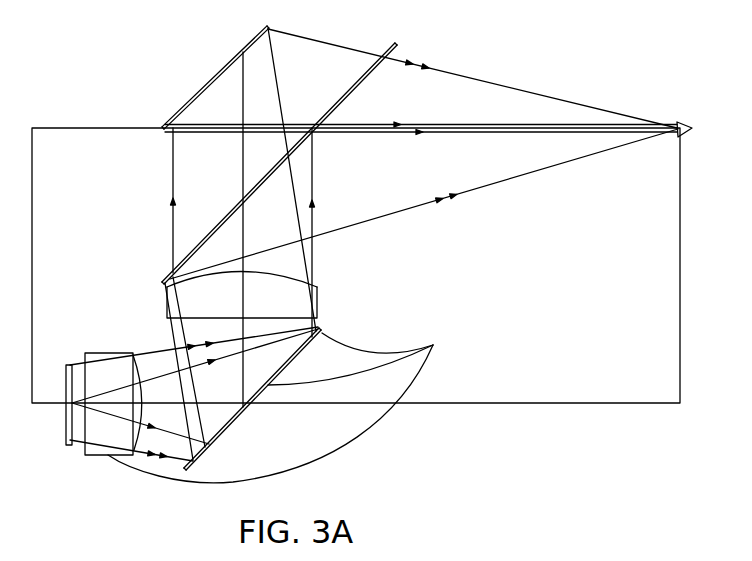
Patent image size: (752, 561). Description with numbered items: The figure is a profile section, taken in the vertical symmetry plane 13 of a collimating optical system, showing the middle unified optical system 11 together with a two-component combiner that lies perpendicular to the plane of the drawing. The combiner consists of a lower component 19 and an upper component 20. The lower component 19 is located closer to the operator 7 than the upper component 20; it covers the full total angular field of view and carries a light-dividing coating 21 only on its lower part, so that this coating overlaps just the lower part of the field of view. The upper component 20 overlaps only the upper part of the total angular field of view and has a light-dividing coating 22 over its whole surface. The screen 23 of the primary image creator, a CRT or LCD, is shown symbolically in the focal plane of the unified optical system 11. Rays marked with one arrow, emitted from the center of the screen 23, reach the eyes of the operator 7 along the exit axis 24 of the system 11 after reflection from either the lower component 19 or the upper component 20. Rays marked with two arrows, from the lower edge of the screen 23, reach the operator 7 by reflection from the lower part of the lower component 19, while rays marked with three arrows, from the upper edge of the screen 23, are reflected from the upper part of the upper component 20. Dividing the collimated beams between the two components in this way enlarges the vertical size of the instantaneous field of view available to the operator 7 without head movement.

The operator 7 is at (672, 123).
The middle unified optical system 11 is at (434, 345).
The vertical symmetry plane 13 is at (107, 147).
The lower component 19 is at (192, 250).
The upper component 20 is at (222, 68).
The light-dividing coating 21 is at (262, 186).
The light-dividing coating 22 is at (200, 103).
The screen 23 is at (67, 388).
The exit axis 24 is at (439, 133).